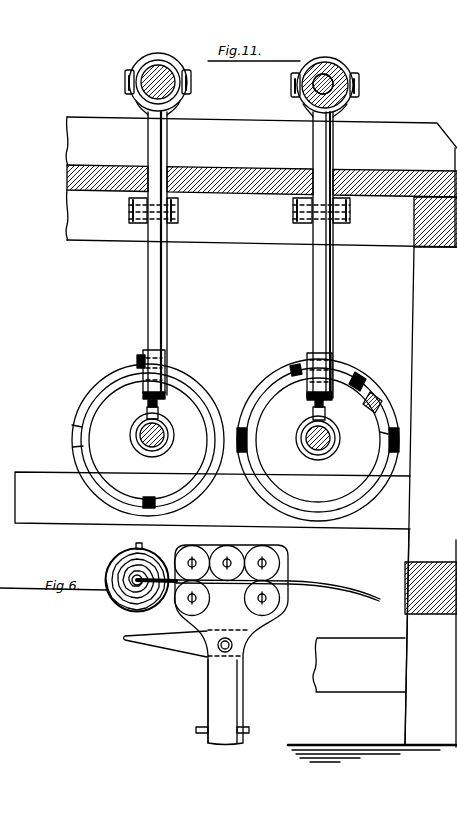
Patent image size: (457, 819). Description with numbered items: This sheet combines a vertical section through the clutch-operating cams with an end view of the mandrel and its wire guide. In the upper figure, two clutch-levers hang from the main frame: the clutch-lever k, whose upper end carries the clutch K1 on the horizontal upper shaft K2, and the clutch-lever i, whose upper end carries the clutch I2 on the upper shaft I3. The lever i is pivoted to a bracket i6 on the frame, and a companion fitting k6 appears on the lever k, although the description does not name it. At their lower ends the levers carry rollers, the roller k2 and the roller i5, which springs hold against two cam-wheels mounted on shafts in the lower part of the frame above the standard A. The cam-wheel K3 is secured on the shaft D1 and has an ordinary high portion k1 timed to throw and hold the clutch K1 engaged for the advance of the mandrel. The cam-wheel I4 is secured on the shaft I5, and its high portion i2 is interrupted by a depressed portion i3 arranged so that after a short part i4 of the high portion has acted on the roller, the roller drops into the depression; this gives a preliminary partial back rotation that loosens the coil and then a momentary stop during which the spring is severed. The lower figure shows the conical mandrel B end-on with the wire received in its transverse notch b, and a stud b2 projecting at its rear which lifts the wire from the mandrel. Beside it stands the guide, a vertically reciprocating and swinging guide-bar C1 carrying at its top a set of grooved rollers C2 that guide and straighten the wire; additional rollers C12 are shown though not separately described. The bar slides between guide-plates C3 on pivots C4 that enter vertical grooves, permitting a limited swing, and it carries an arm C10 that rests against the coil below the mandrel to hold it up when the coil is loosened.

In FIG. 11, the standard A is at (212, 500).
In FIG. 11, the cam-wheel K3 is at (199, 375).
In FIG. 11, the high portion of cam-wheel k1 is at (76, 437).
In FIG. 11, the clutch-lever k is at (157, 291).
In FIG. 11, the clutch K1 is at (158, 74).
In FIG. 11, the upper shaft K2 is at (145, 73).
In FIG. 11, the frame nuts k6 is at (180, 213).
In FIG. 11, the roller k2 is at (165, 371).
In FIG. 11, the rotary shaft I5 is at (138, 428).
In FIG. 11, the cam-wheel I4 is at (357, 378).
In FIG. 11, the depressed portion i3 is at (372, 396).
In FIG. 11, the short part of high portion i4 is at (385, 418).
In FIG. 11, the high portion of cam-wheel i2 is at (279, 366).
In FIG. 11, the clutch-lever i is at (327, 288).
In FIG. 11, the clutch I2 is at (327, 73).
In FIG. 11, the rotary shaft I3 is at (325, 63).
In FIG. 11, the bracket i6 is at (350, 213).
In FIG. 11, the roller i5 is at (328, 386).
In FIG. 11, the rotary shaft D1 is at (304, 434).
In FIG. 6, the conical mandrel B is at (124, 556).
In FIG. 6, the stud b2 is at (143, 548).
In FIG. 6, the transverse notch b is at (121, 596).
In FIG. 6, the guide-bar C1 is at (240, 641).
In FIG. 6, the guide-plates C3 is at (222, 701).
In FIG. 6, the grooved rollers C2 is at (192, 558).
In FIG. 6, the lower rollers C12 is at (296, 605).
In FIG. 6, the arm C10 is at (156, 640).
In FIG. 6, the pivots C4 is at (256, 730).